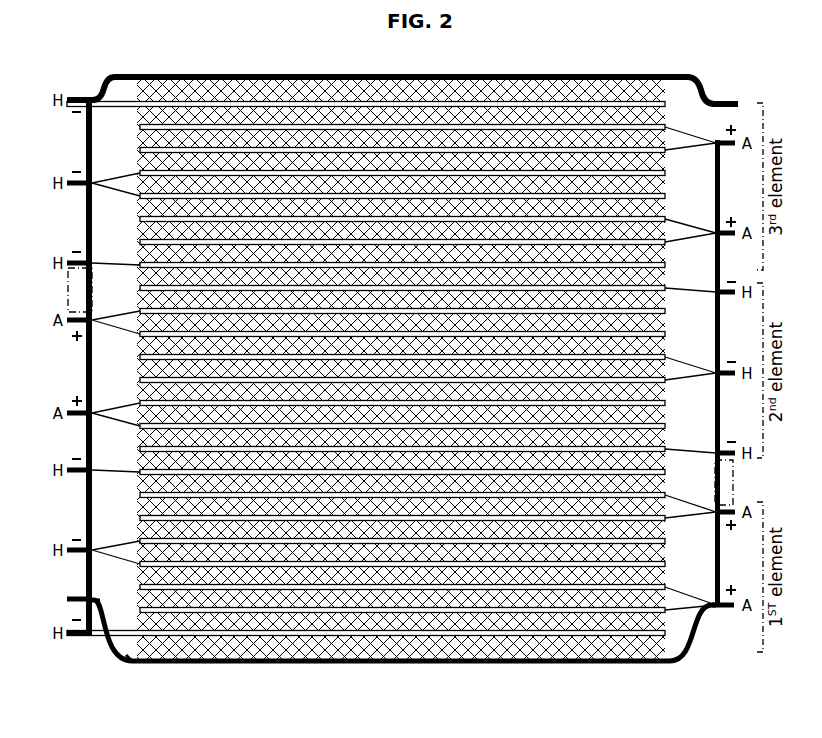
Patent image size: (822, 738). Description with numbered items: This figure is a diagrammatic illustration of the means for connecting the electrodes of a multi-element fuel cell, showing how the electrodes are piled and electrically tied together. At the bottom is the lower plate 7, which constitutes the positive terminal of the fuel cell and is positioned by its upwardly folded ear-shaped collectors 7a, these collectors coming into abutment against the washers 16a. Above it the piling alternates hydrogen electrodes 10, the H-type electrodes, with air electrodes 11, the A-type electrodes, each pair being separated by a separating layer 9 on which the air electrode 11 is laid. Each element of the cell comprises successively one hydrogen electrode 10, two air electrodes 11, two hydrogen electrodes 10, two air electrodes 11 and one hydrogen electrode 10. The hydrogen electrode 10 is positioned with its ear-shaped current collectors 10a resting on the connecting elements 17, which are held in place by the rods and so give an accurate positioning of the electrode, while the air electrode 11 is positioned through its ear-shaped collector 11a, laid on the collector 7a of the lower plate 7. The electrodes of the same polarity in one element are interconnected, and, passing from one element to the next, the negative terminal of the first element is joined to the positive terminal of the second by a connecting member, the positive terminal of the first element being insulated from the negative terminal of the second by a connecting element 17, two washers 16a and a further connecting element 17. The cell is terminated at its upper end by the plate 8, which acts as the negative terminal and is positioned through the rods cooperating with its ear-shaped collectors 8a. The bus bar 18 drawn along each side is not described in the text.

The lower plate 7 is at (336, 666).
The ear-shaped collectors 7a is at (98, 642).
The plate 8 is at (240, 74).
The ear-shaped collectors 8a is at (83, 96).
The separating layer 9 is at (350, 74).
The hydrogen electrode 10 is at (150, 468).
The ear-shaped current collectors 10a is at (95, 642).
The air electrode 11 is at (536, 662).
The ear-shaped collector 11a is at (702, 622).
The washers 16a is at (68, 291).
The connecting elements 17 is at (68, 264).
The bus bar 18 is at (86, 223).